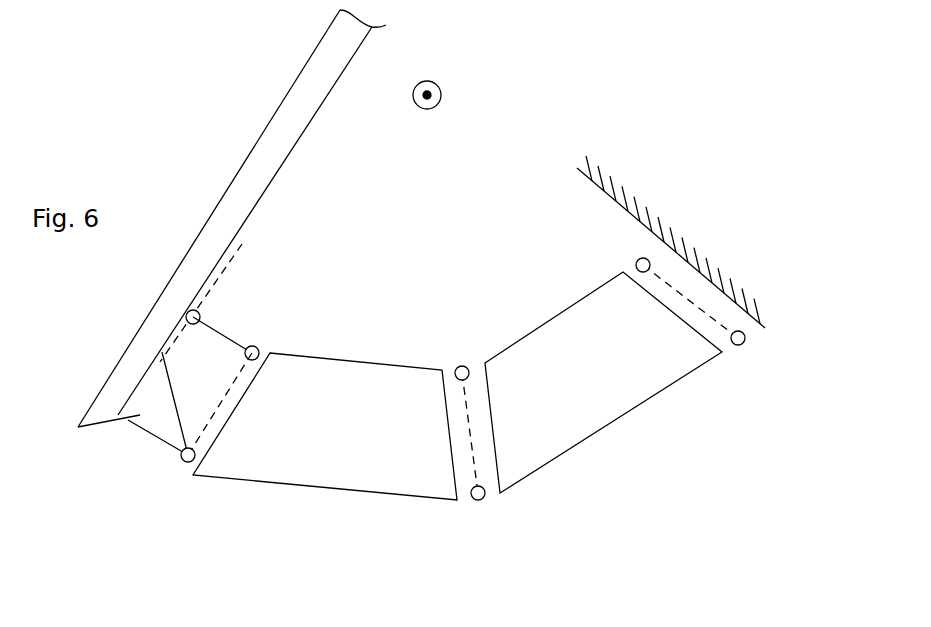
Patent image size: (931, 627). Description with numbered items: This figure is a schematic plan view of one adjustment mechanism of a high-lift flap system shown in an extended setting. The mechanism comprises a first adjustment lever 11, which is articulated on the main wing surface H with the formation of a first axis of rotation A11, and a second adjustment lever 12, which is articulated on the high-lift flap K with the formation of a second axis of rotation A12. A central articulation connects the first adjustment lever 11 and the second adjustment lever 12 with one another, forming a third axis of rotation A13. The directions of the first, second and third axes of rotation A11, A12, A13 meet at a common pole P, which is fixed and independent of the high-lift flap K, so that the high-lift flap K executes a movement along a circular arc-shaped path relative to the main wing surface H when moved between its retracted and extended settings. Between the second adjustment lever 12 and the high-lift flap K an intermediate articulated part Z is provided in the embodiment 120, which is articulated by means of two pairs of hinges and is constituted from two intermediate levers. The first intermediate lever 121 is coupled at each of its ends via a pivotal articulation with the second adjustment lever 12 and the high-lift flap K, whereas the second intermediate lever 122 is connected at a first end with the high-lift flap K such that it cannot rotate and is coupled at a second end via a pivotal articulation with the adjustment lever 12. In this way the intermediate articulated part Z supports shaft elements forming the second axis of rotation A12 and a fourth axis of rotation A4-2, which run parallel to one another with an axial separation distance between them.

The high-lift flap K is at (243, 180).
The common pole P is at (432, 82).
The main wing surface H is at (635, 200).
The fourth axis of rotation A4-2 is at (237, 262).
The first intermediate lever 121 is at (220, 331).
The second intermediate lever 122 is at (120, 415).
The second axis of rotation A12 is at (200, 435).
The intermediate articulated part Z is at (117, 482).
The intermediate articulated part embodiment 120 is at (497, 401).
The second adjustment lever 12 is at (332, 463).
The third axis of rotation A13 is at (466, 412).
The first adjustment lever 11 is at (607, 405).
The first axis of rotation A11 is at (675, 290).